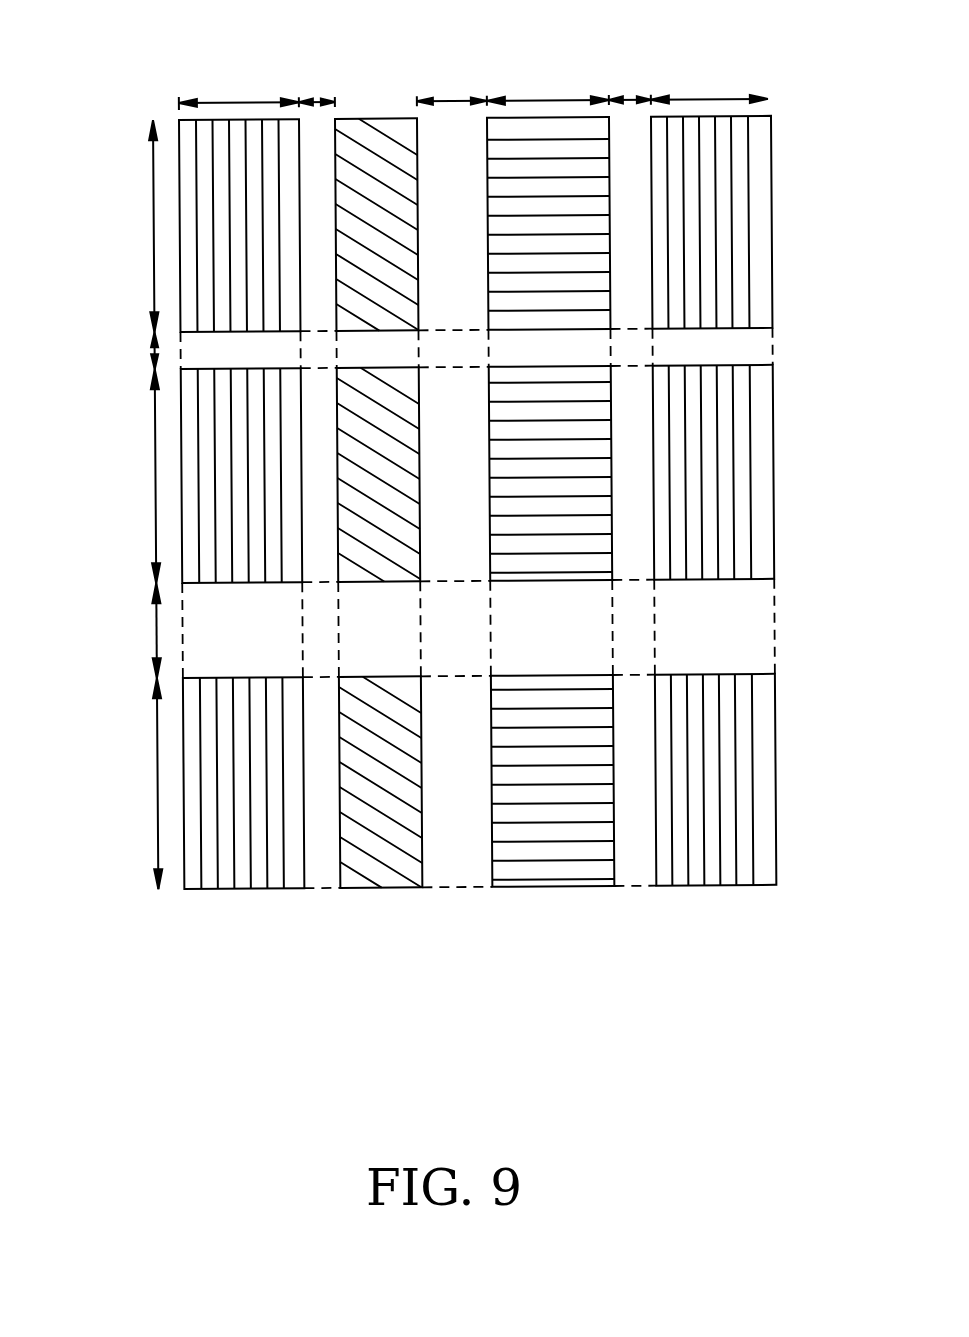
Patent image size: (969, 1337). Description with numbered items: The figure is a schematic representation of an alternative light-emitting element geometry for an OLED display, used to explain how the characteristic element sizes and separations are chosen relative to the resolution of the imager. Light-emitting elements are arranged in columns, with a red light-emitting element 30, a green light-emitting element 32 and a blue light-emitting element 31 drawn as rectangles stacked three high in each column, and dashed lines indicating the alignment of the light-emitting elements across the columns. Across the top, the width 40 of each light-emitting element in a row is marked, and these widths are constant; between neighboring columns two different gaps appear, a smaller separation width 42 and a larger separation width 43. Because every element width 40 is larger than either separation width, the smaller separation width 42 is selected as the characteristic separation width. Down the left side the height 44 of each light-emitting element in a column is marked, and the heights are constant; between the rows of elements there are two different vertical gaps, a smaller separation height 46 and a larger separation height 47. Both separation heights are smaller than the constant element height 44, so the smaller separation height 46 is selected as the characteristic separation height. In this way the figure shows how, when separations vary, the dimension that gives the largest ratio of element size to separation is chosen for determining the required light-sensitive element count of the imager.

The light-emitting element 30 is at (763, 200).
The blue light-emitting element 31 is at (548, 880).
The light-emitting element 32 is at (382, 880).
The width 40 is at (238, 103).
The separation width 42 is at (316, 103).
The separation width 43 is at (449, 103).
The height 44 is at (152, 226).
The separation height 46 is at (152, 351).
The separation height 47 is at (152, 633).